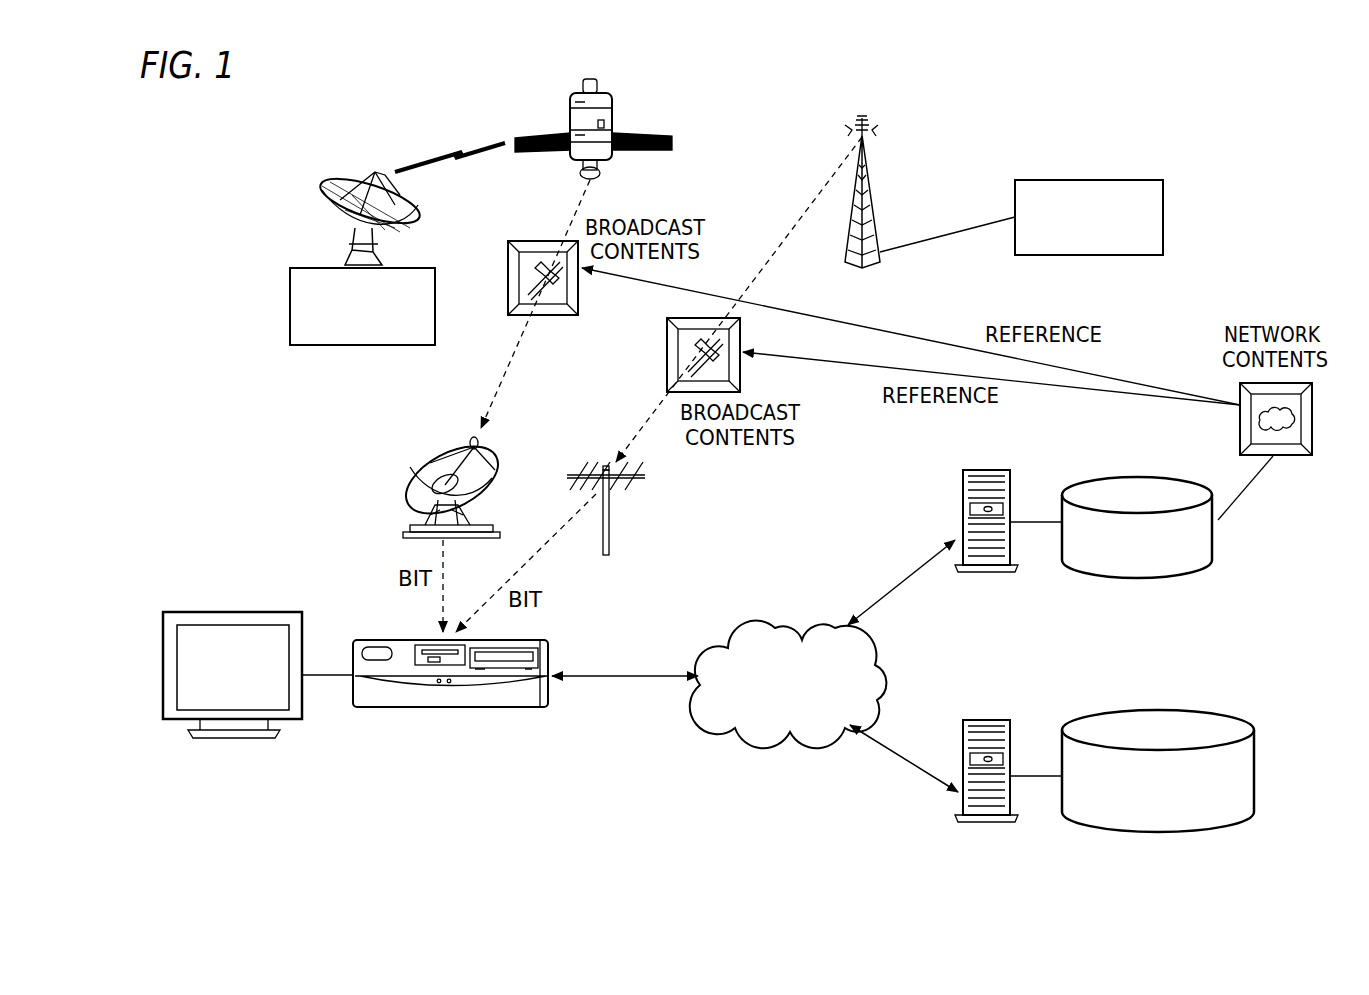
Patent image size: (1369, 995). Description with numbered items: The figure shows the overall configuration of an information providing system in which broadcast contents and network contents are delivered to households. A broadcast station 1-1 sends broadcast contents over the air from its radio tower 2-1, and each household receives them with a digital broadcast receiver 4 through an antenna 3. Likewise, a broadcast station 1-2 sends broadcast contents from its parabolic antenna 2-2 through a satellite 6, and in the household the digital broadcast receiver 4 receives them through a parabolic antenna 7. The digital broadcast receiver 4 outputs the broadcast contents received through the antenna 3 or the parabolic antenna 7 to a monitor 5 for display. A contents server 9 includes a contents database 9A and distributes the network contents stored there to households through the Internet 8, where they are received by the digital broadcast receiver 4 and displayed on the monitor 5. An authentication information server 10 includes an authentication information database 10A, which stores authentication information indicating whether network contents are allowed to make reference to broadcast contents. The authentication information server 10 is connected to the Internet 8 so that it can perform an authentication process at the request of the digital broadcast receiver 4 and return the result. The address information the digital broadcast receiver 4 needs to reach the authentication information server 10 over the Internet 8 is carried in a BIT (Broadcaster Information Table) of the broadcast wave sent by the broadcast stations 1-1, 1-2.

The broadcast station 1-1 is at (1088, 180).
The broadcast station 1-2 is at (290, 300).
The radio tower 2-1 is at (878, 185).
The parabolic antenna 2-2 is at (322, 203).
The antenna 3 is at (612, 522).
The digital broadcast receiver 4 is at (452, 708).
The monitor 5 is at (237, 745).
The satellite 6 is at (612, 107).
The parabolic antenna 7 is at (410, 475).
The Internet 8 is at (788, 732).
The contents server 9 is at (982, 470).
The contents database 9A is at (1138, 580).
The authentication information server 10 is at (986, 720).
The authentication information database 10A is at (1256, 775).